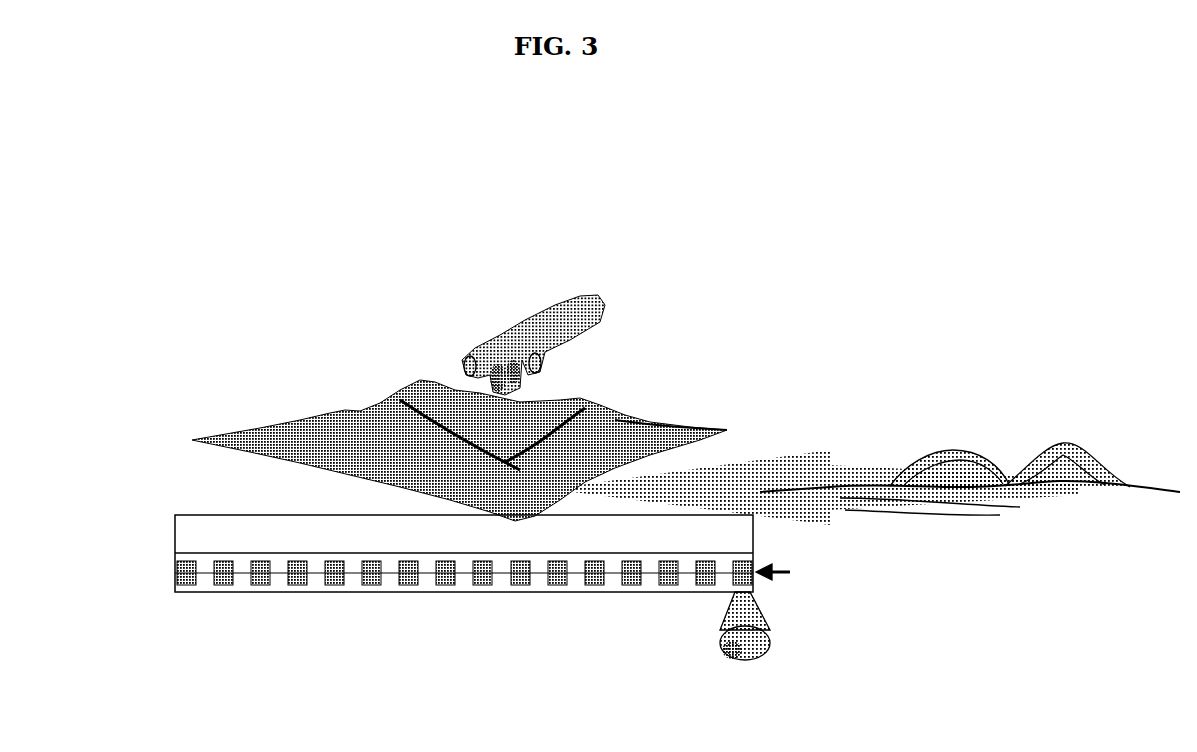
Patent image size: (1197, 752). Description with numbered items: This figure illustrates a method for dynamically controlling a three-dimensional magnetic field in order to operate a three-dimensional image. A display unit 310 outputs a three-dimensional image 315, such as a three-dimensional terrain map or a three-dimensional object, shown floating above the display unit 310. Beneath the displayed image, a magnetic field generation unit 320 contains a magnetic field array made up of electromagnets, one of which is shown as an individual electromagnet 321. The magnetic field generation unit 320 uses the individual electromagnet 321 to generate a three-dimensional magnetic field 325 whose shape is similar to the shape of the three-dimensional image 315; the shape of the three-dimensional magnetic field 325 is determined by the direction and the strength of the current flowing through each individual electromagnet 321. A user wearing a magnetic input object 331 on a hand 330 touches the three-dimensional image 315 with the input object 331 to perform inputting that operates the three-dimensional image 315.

The display unit 310 is at (175, 532).
The 3D image 315 is at (305, 432).
The magnetic field generation unit 320 is at (175, 593).
The individual electromagnet 321 is at (745, 652).
The 3D magnetic field 325 is at (1080, 460).
The hand 330 is at (573, 308).
The magnetic input object 331 is at (537, 350).